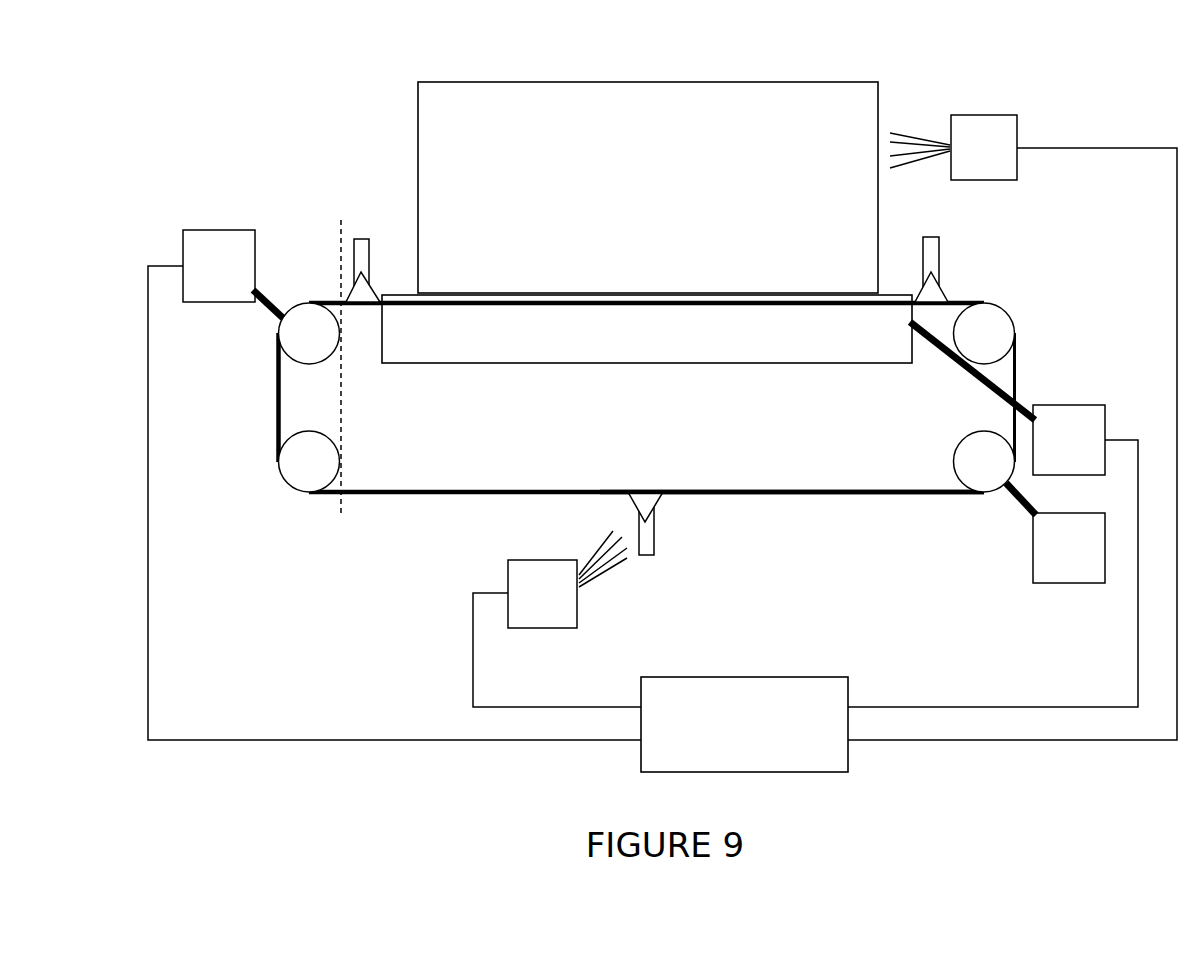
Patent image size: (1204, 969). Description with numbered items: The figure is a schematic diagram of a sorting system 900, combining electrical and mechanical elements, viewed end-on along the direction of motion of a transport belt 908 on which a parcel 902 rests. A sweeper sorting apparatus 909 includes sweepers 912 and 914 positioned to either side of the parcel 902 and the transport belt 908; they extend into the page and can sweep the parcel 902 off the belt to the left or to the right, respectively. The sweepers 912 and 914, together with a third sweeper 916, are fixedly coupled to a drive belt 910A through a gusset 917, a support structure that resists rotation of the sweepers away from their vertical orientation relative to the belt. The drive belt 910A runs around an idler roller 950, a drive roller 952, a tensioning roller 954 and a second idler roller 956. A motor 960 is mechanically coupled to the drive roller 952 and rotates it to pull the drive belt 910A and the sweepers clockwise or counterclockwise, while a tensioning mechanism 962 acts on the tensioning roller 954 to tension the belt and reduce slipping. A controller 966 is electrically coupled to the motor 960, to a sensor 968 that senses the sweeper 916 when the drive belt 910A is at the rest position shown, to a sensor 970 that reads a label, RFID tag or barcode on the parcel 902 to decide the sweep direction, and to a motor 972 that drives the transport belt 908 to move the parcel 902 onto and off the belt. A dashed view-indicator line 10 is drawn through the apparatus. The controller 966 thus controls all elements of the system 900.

The sorting system 900 is at (946, 66).
The parcel 902 is at (629, 199).
The transport belt 908 is at (628, 341).
The sweeper sorting apparatus 909 is at (449, 530).
The drive belt 910A is at (800, 494).
The sweeper 912 is at (937, 268).
The sweeper 914 is at (355, 237).
The sweeper 916 is at (655, 528).
The gusset 917 is at (645, 490).
The idler roller 950 is at (965, 344).
The drive roller 952 is at (290, 344).
The tensioning roller 954 is at (290, 472).
The idler roller 956 is at (965, 472).
The motor 960 is at (200, 290).
The tensioning mechanism 962 is at (1050, 574).
The controller 966 is at (725, 752).
The sensor 968 is at (523, 620).
The sensor 970 is at (965, 174).
The motor 972 is at (1050, 466).
The section line 10 is at (341, 220).